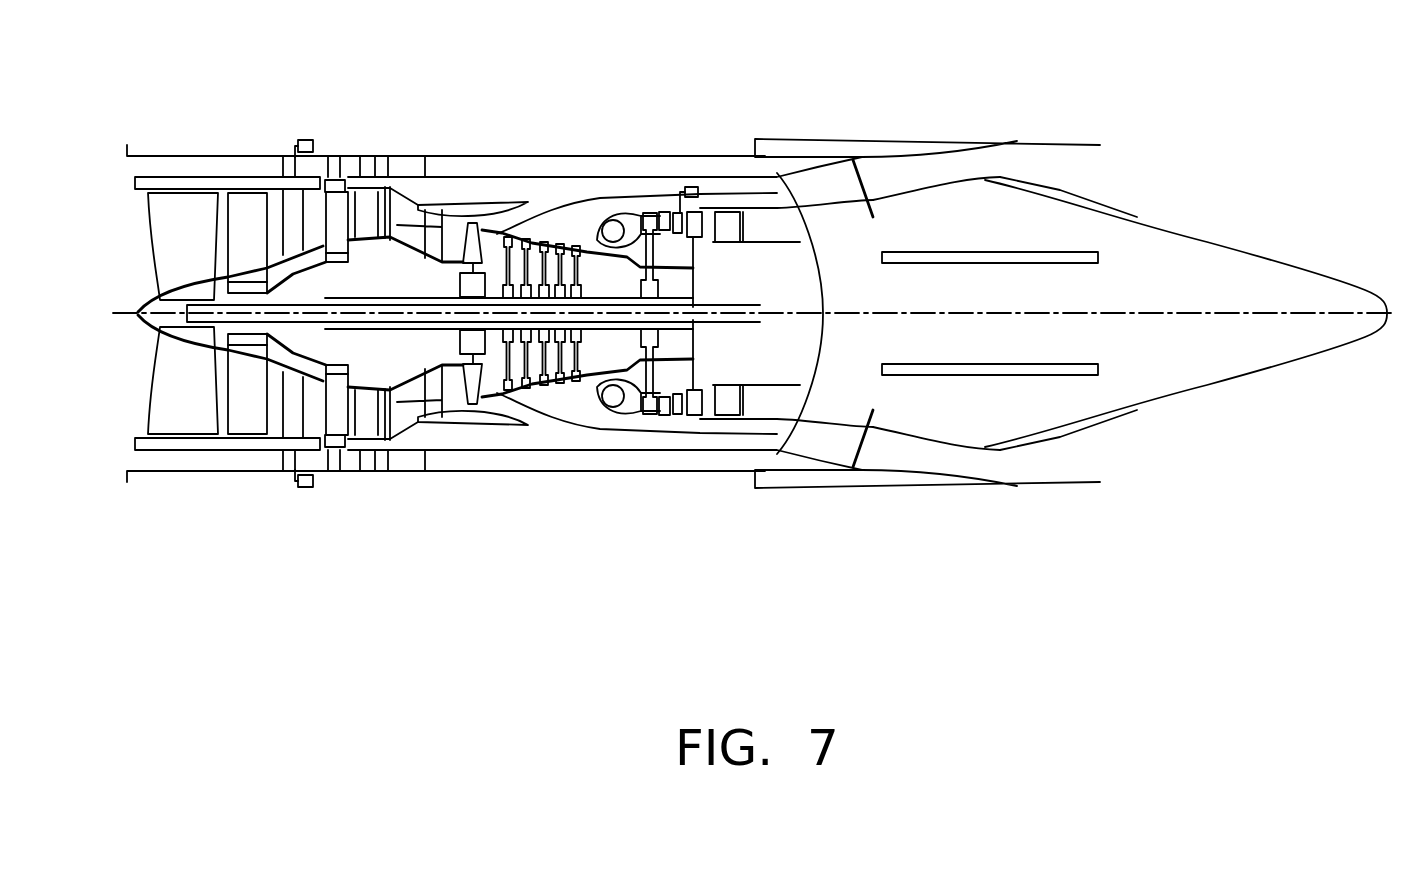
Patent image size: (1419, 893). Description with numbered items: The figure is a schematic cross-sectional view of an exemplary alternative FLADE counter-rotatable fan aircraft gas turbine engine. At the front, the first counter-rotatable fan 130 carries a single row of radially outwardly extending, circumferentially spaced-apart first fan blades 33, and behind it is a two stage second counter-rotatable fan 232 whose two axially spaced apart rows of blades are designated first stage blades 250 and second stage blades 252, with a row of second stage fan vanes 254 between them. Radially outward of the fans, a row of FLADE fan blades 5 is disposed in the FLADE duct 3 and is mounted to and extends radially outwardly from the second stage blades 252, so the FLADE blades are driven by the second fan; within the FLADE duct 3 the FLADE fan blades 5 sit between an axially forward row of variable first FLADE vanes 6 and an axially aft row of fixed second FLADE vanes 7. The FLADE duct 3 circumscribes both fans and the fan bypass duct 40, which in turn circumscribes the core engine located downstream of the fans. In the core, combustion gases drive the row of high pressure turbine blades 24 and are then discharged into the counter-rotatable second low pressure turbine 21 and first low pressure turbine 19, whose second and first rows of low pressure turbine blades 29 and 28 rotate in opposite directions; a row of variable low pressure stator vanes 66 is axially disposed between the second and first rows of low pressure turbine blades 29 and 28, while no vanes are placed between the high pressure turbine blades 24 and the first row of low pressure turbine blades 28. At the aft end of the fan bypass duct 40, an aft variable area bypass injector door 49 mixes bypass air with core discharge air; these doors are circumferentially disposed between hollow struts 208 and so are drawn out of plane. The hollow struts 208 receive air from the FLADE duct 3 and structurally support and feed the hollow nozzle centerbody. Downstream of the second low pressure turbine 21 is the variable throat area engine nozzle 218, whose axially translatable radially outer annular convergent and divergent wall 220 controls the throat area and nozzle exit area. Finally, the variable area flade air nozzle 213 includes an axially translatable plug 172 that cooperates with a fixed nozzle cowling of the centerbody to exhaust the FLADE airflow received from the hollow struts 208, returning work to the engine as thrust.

The FLADE duct 3 is at (458, 163).
The FLADE fan blades 5 is at (333, 157).
The variable first FLADE vanes 6 is at (298, 160).
The fixed second FLADE vanes 7 is at (335, 223).
The first low pressure turbine 19 is at (693, 280).
The second low pressure turbine 21 is at (697, 240).
The high pressure turbine blades 24 is at (632, 215).
The first row of low pressure turbine blades 28 is at (648, 210).
The second row of low pressure turbine blades 29 is at (700, 207).
The first fan blades 33 is at (178, 197).
The fan bypass duct 40 is at (485, 192).
The aft variable area bypass injector (VABI) door 49 is at (832, 197).
The variable low pressure stator vanes 66 is at (665, 195).
The first counter-rotatable fan 130 is at (168, 325).
The axially translatable plug 172 is at (1207, 242).
The hollow struts 208 is at (875, 203).
The variable area flade air nozzle 213 is at (1097, 203).
The variable throat area engine nozzle 218 is at (1097, 191).
The axially translatable radially outer annular convergent and divergent wall 220 is at (818, 138).
The two stage second counter-rotatable fan 232 is at (313, 272).
The first stage blades 250 is at (248, 197).
The second stage blades 252 is at (380, 157).
The second stage fan vanes 254 is at (295, 217).